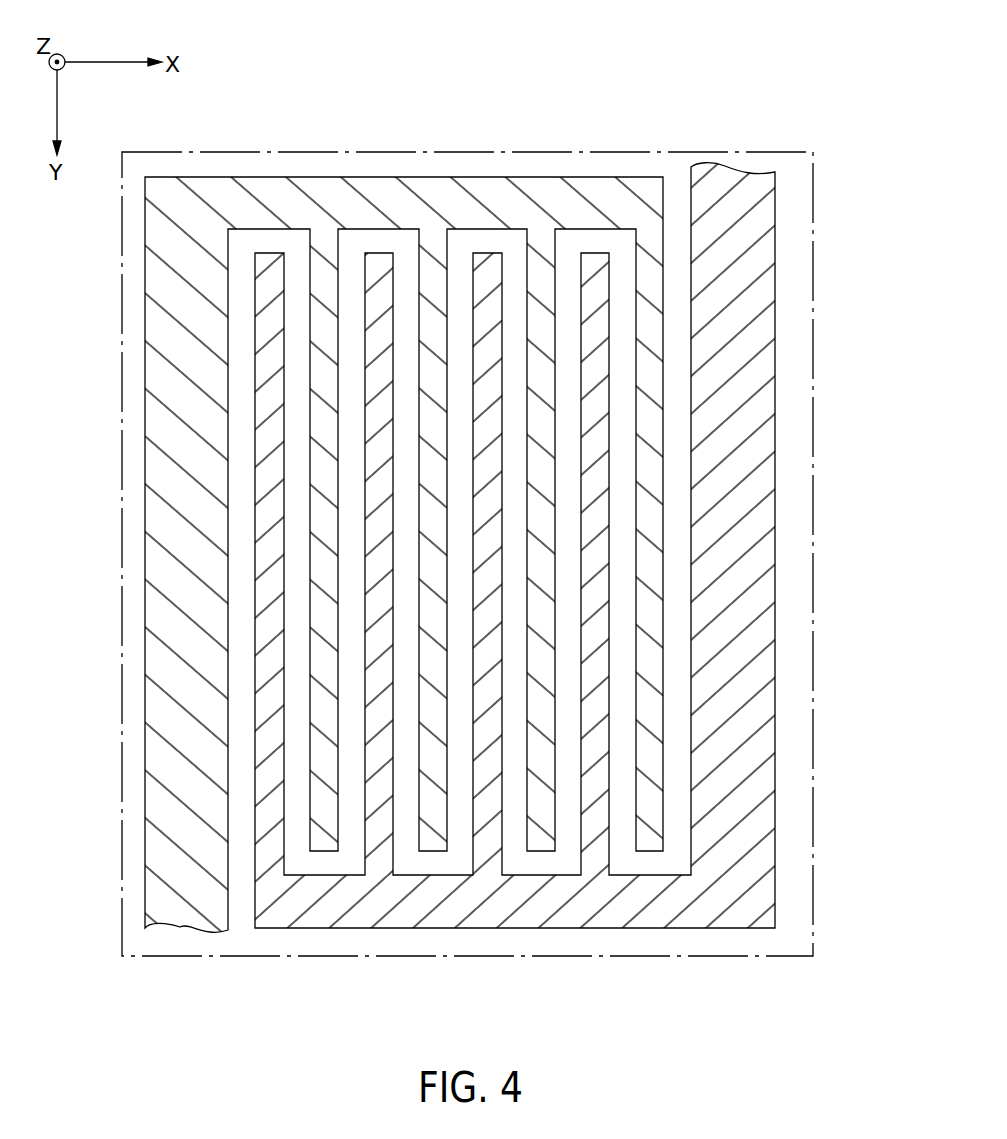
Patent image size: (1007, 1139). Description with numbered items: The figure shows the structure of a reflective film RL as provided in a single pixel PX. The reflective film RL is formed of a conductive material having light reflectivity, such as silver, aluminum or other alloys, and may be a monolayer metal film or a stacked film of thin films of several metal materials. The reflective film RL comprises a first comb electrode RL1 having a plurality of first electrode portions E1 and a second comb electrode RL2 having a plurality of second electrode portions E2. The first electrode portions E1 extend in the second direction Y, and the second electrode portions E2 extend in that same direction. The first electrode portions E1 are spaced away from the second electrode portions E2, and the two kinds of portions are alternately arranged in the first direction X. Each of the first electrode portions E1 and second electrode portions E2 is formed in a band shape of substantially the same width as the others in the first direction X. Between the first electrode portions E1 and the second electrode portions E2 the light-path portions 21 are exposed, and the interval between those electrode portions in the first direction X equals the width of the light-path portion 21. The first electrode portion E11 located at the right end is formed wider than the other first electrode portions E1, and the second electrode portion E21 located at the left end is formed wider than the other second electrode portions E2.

The pixel PX is at (793, 150).
The reflective film RL is at (722, 82).
The first comb electrode RL1 is at (287, 913).
The second comb electrode RL2 is at (640, 203).
The first electrode portions E1 is at (561, 557).
The second electrode portions E2 is at (360, 543).
The first electrode portion E11 is at (750, 637).
The second electrode portion E21 is at (172, 626).
The light-path portion 21 is at (348, 494).